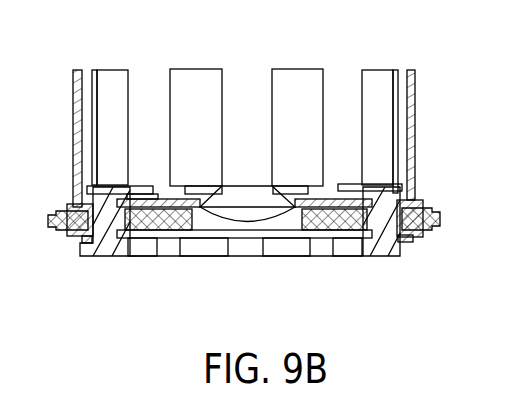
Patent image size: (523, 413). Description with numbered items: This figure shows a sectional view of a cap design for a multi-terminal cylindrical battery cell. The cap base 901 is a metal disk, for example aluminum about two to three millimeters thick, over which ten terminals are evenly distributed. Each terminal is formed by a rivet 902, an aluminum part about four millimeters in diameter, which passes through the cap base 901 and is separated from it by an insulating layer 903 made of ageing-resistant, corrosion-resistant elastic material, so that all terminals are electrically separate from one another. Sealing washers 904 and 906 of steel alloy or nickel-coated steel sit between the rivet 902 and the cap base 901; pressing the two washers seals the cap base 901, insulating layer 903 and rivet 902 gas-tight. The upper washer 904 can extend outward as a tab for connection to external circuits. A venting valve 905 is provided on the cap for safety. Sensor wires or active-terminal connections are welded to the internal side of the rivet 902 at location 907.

The cap base 901 is at (328, 236).
The rivet 902 is at (390, 243).
The insulating layer 903 is at (418, 236).
The sealing washer 904 is at (297, 68).
The venting valve 905 is at (252, 200).
The sealing washer 906 is at (410, 245).
The location 907 is at (195, 253).